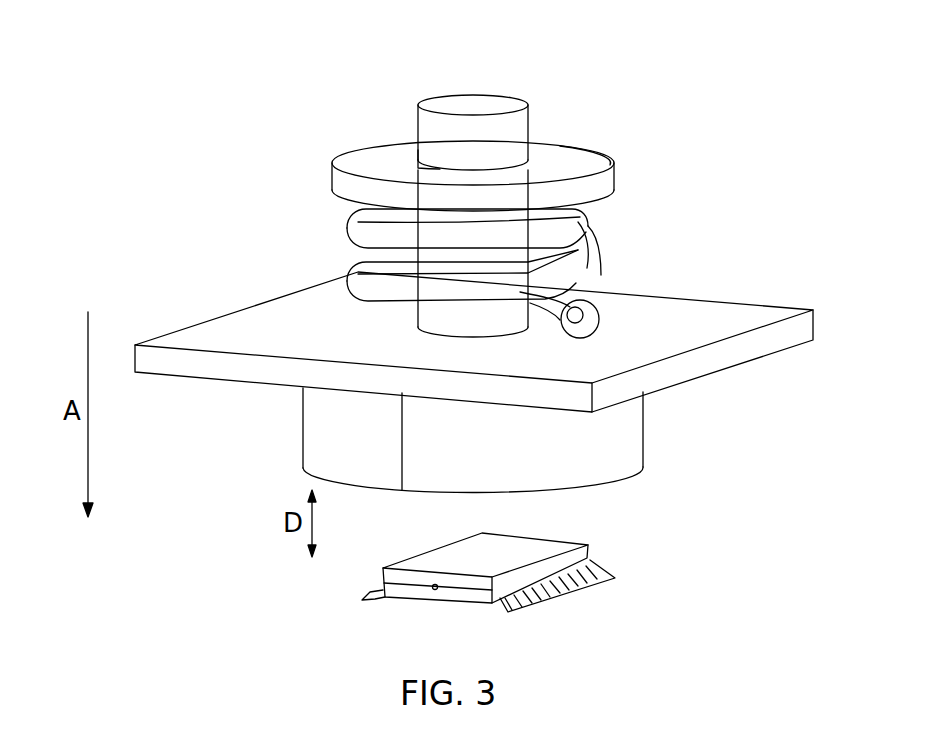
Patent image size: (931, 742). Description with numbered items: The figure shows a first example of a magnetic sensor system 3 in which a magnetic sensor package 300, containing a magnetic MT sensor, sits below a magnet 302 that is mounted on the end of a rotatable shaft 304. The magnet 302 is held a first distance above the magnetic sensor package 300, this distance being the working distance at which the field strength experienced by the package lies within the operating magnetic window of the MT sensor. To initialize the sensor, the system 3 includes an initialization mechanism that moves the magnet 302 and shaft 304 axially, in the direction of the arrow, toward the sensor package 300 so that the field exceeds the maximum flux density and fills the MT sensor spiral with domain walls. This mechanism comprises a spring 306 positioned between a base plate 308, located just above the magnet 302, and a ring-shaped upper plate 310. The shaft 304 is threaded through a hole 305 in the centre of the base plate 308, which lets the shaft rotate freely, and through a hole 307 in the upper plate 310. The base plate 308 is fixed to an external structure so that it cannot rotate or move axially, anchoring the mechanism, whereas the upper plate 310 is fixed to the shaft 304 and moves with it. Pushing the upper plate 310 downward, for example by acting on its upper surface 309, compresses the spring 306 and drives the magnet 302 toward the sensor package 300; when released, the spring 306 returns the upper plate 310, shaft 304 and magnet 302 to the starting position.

The magnetic sensor system 3 is at (120, 215).
The magnetic sensor package 300 is at (580, 545).
The magnet 302 is at (627, 437).
The rotatable shaft 304 is at (488, 107).
The hole in the base plate 305 is at (418, 330).
The spring 306 is at (346, 230).
The hole in the upper plate 307 is at (430, 167).
The base plate 308 is at (770, 315).
The upper surface 309 is at (367, 158).
The upper plate 310 is at (582, 145).